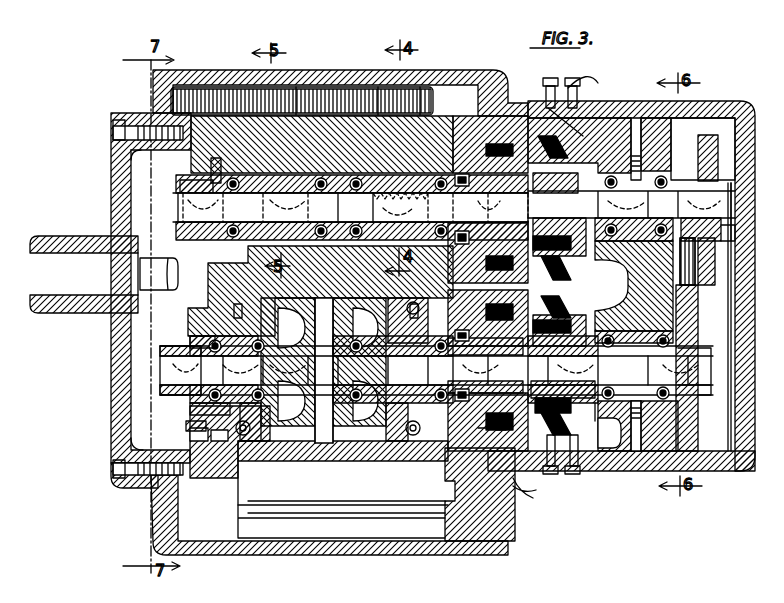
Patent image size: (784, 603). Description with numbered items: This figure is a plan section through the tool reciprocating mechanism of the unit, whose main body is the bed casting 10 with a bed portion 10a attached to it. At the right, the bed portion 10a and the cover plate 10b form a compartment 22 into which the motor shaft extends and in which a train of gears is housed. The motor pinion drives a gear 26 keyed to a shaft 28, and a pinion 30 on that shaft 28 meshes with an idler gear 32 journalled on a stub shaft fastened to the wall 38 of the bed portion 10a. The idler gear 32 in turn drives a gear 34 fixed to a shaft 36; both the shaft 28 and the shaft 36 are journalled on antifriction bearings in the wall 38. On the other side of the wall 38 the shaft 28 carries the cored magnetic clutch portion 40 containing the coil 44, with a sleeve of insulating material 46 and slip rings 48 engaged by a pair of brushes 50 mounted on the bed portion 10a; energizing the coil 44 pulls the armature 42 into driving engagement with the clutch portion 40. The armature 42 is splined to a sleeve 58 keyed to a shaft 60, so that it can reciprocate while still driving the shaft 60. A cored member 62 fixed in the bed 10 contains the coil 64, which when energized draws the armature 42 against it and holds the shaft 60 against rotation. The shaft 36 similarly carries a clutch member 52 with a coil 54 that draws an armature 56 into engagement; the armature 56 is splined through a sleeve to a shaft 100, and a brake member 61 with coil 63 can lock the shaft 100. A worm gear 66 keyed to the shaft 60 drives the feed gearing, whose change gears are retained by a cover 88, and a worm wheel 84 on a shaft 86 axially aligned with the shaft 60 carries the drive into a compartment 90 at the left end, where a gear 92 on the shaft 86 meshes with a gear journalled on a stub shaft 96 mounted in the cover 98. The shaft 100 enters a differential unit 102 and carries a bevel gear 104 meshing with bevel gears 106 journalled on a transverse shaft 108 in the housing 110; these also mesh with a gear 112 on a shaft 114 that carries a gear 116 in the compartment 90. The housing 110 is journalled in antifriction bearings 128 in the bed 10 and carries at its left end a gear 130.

The bed casting 10 is at (300, 120).
The bed portion 10a is at (608, 464).
The cover plate 10b is at (717, 463).
The compartment 22 is at (668, 125).
The gear 26 is at (720, 120).
The shaft 28 is at (717, 197).
The pinion 30 is at (707, 238).
The idler gear 32 is at (700, 266).
The gear 34 is at (690, 303).
The shaft 36 is at (707, 355).
The wall 38 is at (640, 273).
The magnetic clutch portion 40 is at (585, 150).
The armature 42 is at (540, 92).
The coil 44 is at (578, 145).
The sleeve of insulating material 46 is at (585, 140).
The slip rings 48 is at (575, 128).
The brushes 50 is at (563, 80).
The clutch member 52 is at (582, 310).
The coil 54 is at (605, 422).
The armature 56 is at (507, 430).
The sleeve 58 is at (490, 204).
The shaft 60 is at (355, 207).
The brake member 61 is at (472, 420).
The cored member 62 is at (470, 130).
The coil 63 is at (490, 422).
The coil 64 is at (489, 130).
The worm gear 66 is at (400, 207).
The worm wheel 84 is at (217, 207).
The shaft 86 is at (285, 206).
The cover 88 is at (207, 70).
The compartment 90 is at (178, 142).
The gear 92 is at (180, 175).
The stub shaft 96 is at (65, 252).
The cover 98 is at (104, 382).
The shaft 100 is at (408, 336).
The differential unit 102 is at (248, 435).
The bevel gear 104 is at (365, 400).
The bevel gears 106 is at (342, 420).
The shaft 108 is at (305, 430).
The housing 110 is at (290, 420).
The gear 112 is at (230, 545).
The shaft 114 is at (165, 370).
The gear 116 is at (170, 397).
The antifriction bearings 128 is at (408, 427).
The gear 130 is at (185, 447).